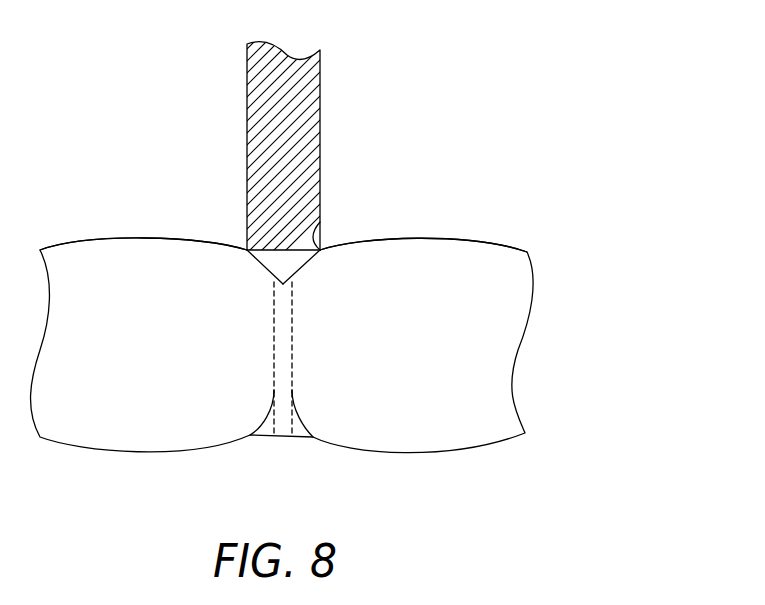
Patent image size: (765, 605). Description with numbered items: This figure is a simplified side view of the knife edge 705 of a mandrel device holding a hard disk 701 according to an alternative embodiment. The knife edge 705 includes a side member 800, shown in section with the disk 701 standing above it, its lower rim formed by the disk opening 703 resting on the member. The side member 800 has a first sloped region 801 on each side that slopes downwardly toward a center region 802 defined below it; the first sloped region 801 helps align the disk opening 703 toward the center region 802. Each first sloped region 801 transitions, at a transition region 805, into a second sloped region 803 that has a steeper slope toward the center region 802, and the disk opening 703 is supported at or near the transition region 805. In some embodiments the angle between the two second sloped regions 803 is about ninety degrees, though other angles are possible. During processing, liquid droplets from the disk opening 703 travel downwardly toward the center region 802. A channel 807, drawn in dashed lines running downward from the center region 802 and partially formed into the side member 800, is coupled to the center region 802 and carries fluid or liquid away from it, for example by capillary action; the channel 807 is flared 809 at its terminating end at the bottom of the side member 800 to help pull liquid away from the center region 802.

The disk 701 is at (313, 78).
The disk opening 703 is at (322, 222).
The knife edge 705 is at (502, 96).
The side member 800 is at (525, 310).
The first sloped region 801 is at (148, 237).
The center region 802 is at (282, 290).
The second sloped region 803 is at (253, 257).
The transition region 805 is at (318, 252).
The channel 807 is at (287, 373).
The flared end of channel 809 is at (300, 437).